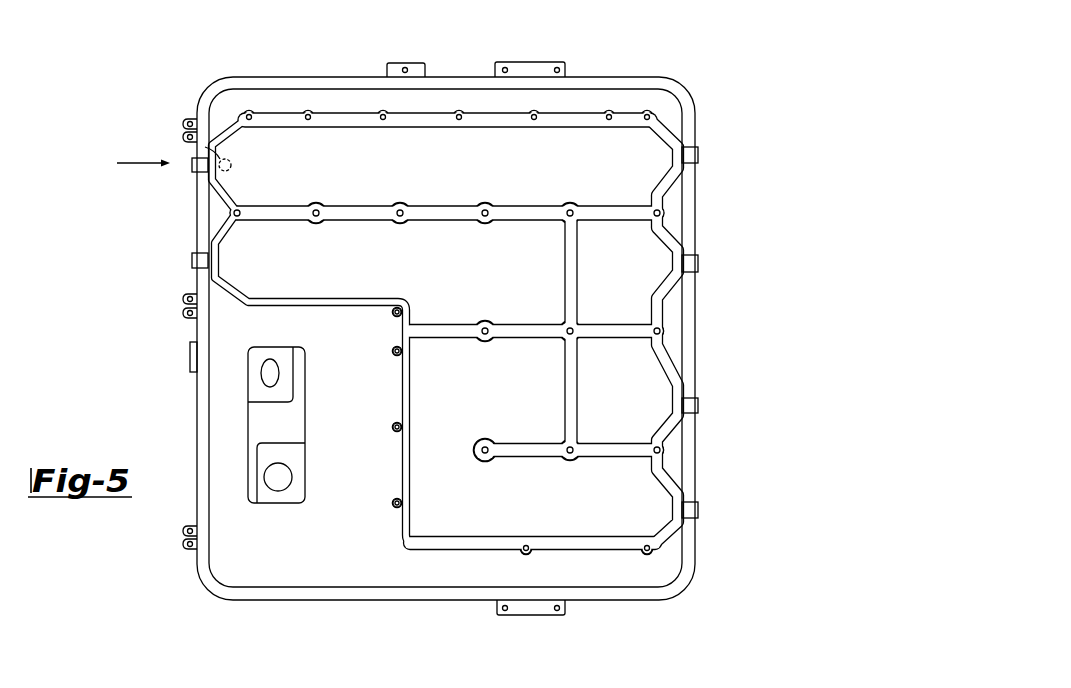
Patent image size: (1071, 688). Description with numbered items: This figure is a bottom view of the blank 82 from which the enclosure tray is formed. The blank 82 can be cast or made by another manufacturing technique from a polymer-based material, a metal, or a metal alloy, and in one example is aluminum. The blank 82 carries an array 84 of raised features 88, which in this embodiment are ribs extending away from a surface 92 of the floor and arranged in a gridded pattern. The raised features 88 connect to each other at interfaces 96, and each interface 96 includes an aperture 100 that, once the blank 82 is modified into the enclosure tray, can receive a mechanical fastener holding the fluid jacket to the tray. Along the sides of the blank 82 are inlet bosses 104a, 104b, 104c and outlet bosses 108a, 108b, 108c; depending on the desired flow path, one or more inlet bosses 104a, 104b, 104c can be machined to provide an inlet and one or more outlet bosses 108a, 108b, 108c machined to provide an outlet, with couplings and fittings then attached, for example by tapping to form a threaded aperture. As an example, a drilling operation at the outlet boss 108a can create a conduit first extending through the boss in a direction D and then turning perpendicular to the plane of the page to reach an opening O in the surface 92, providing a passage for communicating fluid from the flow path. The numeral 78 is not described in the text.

The blank 82 is at (668, 52).
The gasket 78 is at (288, 138).
The surface 92 is at (482, 158).
The interfaces 96 is at (313, 250).
The aperture 100 is at (313, 245).
The array 84 is at (636, 216).
The raised features 88 is at (568, 307).
The outlet boss 108a is at (698, 155).
The outlet boss 108b is at (194, 172).
The outlet boss 108c is at (698, 265).
The inlet boss 104a is at (698, 510).
The inlet boss 104b is at (192, 261).
The inlet boss 104c is at (698, 406).
The opening O is at (205, 147).
The direction D is at (135, 165).